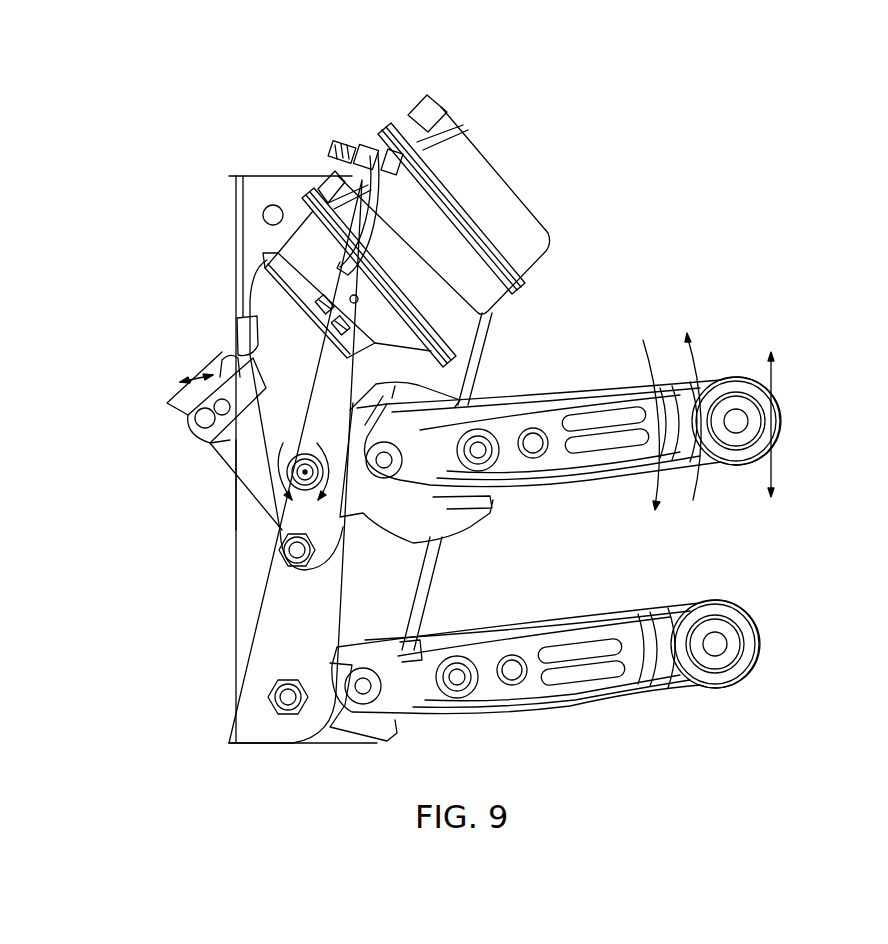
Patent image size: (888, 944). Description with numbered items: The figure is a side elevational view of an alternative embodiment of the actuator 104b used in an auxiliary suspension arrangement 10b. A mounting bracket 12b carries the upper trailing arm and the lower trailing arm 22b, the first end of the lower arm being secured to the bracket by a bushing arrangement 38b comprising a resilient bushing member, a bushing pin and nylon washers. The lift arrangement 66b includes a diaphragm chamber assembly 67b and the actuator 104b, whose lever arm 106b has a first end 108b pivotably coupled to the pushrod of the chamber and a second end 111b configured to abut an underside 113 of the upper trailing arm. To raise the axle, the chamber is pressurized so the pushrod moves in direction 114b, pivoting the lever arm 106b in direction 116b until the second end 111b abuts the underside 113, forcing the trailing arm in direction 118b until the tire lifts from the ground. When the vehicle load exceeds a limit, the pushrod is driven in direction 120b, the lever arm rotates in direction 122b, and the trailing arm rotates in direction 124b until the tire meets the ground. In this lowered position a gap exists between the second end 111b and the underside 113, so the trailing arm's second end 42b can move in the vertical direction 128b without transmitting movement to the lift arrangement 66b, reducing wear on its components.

The auxiliary suspension arrangement 10b is at (208, 166).
The mounting bracket 12b is at (227, 683).
The lower trailing arm 22b is at (637, 703).
The bushing arrangement 38b is at (303, 474).
The second end 42b is at (728, 467).
The lift arrangement 66b is at (196, 356).
The diaphragm chamber assembly 67b is at (497, 158).
The actuator 104b is at (218, 476).
The lever arm 106b is at (211, 458).
The first end 108b is at (223, 443).
The second end 111b is at (455, 522).
The underside 113 is at (512, 487).
The direction 114b is at (218, 352).
The direction 116b is at (283, 443).
The direction 118b is at (697, 358).
The direction 120b is at (167, 403).
The direction 122b is at (317, 443).
The direction 124b is at (645, 363).
The vertical direction 128b is at (772, 376).